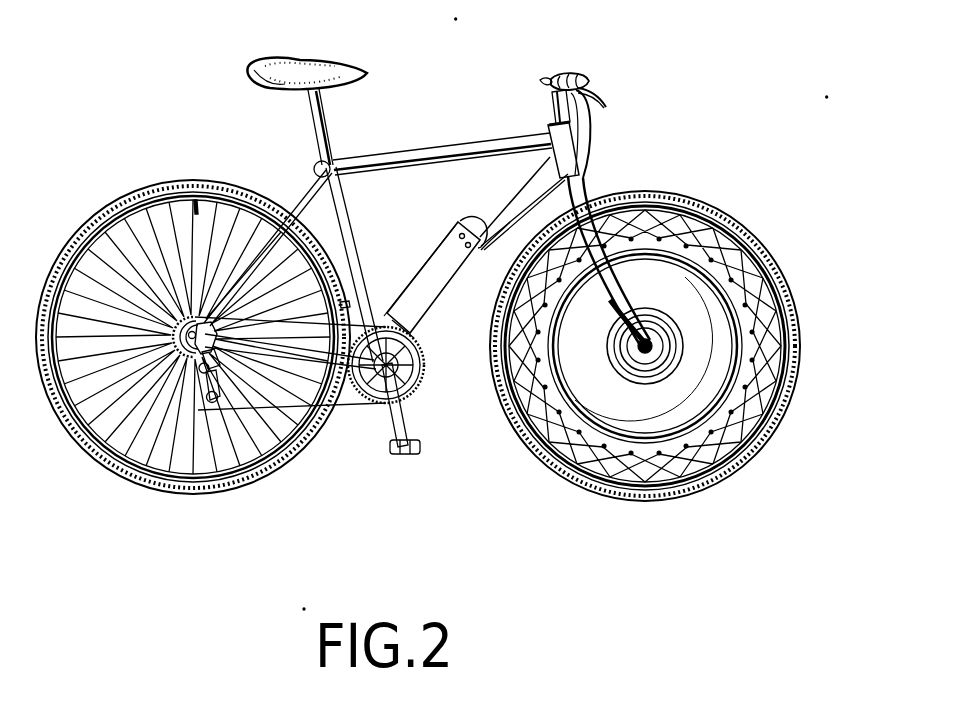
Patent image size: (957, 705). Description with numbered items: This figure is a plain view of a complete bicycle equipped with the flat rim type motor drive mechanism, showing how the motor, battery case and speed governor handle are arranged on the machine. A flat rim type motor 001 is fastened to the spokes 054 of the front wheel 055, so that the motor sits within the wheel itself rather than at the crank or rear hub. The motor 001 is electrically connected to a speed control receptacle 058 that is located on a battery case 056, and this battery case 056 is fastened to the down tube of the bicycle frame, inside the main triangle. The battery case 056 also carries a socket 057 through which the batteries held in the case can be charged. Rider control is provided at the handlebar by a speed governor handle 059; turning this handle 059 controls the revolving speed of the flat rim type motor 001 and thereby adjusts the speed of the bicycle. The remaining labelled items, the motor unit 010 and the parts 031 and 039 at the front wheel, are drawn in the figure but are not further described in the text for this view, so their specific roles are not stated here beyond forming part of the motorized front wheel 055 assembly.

The flat rim type motor 001 is at (666, 350).
The hub motor 010 is at (640, 366).
The spokes 031 is at (770, 375).
The motor housing ring 039 is at (767, 443).
The spokes 054 is at (777, 307).
The front wheel 055 is at (690, 202).
The battery case 056 is at (418, 276).
The socket 057 is at (458, 224).
The speed control receptacle 058 is at (480, 250).
The speed governor handle 059 is at (582, 78).